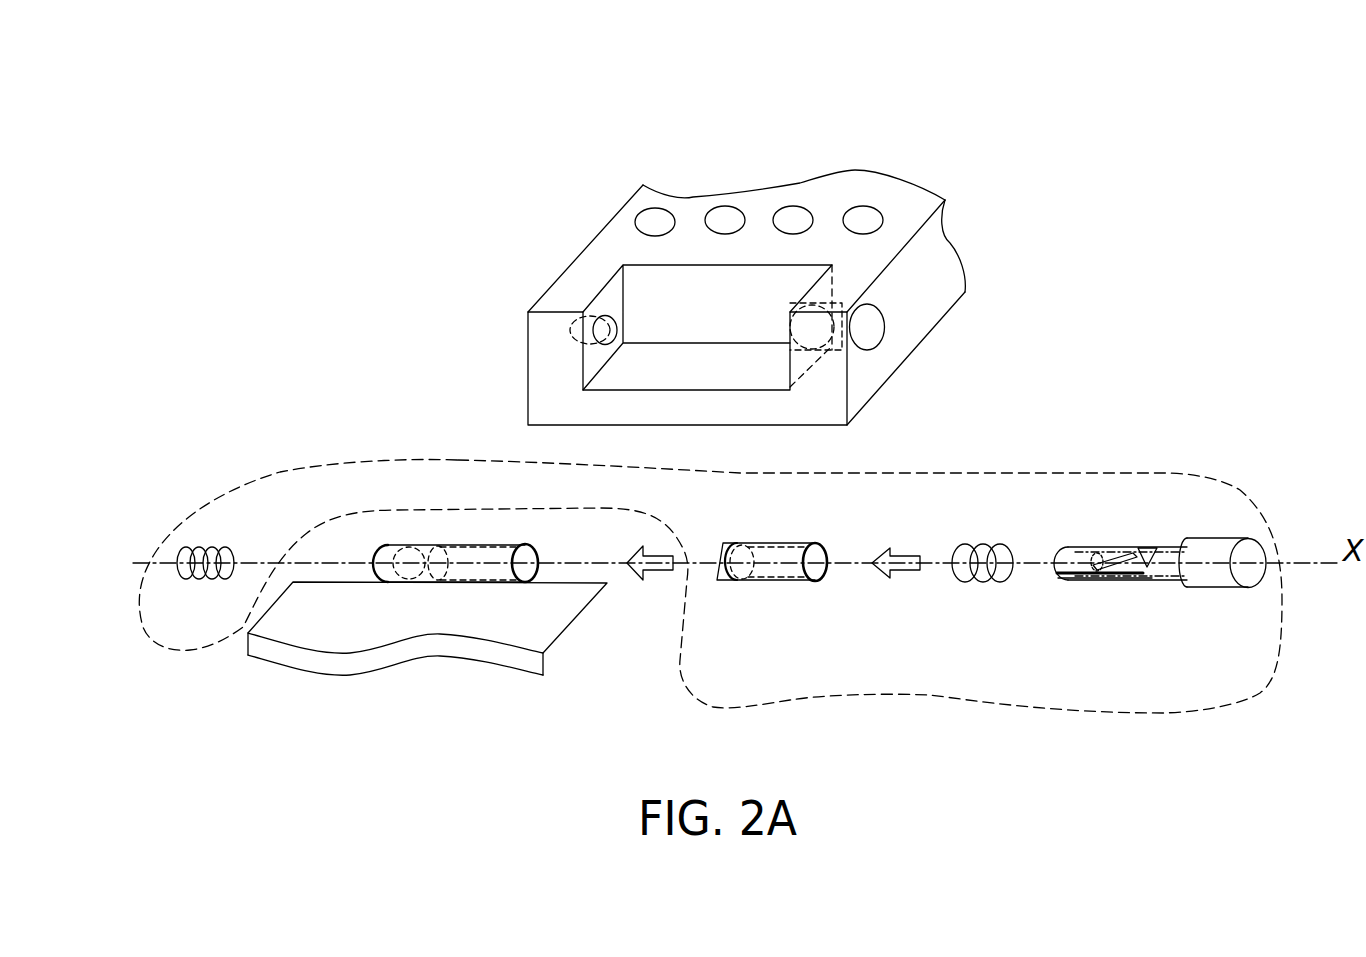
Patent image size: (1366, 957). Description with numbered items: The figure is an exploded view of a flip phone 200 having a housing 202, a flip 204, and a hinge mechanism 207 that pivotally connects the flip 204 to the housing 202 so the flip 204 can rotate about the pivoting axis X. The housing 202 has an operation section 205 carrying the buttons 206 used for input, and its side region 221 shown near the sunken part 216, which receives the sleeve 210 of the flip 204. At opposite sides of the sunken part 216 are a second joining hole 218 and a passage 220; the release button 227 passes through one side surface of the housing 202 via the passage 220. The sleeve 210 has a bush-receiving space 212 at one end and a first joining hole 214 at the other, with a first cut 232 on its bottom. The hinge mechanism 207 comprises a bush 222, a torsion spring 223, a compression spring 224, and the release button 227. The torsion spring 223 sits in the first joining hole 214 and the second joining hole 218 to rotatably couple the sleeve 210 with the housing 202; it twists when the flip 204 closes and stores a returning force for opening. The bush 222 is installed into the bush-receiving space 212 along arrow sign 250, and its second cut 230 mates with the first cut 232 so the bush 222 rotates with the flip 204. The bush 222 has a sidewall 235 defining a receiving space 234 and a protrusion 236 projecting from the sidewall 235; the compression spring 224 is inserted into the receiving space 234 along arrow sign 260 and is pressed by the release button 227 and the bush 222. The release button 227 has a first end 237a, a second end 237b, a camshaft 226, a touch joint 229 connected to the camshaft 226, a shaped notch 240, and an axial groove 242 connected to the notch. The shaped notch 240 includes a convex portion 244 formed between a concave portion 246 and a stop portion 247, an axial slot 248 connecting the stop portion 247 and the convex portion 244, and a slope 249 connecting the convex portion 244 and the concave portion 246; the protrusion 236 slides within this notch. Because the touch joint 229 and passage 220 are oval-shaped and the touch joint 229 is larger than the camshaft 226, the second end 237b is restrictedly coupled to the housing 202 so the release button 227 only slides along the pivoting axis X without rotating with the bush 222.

The flip phone 200 is at (1041, 137).
The housing 202 is at (786, 267).
The flip 204 is at (385, 666).
The operation section 205 is at (693, 205).
The buttons 206 is at (655, 222).
The hinge mechanism 207 is at (507, 462).
The sleeve 210 is at (444, 643).
The bush-receiving space 212 is at (533, 575).
The first joining hole 214 is at (390, 580).
The sunken part 216 is at (755, 298).
The second joining hole 218 is at (611, 318).
The passage 220 is at (876, 337).
The side wall 221 is at (923, 293).
The bush 222 is at (785, 582).
The torsion spring 223 is at (202, 580).
The compression spring 224 is at (980, 585).
The camshaft 226 is at (1163, 577).
The release button 227 is at (1206, 600).
The touch joint 229 is at (1232, 565).
The second cut 230 is at (782, 647).
The first cut 232 is at (437, 582).
The receiving space 234 is at (822, 577).
The sidewall 235 is at (780, 587).
The protrusion 236 is at (810, 582).
The first end 237a is at (1052, 553).
The second end 237b is at (1258, 537).
The shaped notch 240 is at (1096, 568).
The axial groove 242 is at (1062, 577).
The convex portion 244 is at (1147, 545).
The concave portion 246 is at (1083, 582).
The stop portion 247 is at (1095, 548).
The axial slot 248 is at (1117, 550).
The slope 249 is at (1117, 577).
The arrow sign 250 is at (663, 568).
The arrow sign 260 is at (908, 572).